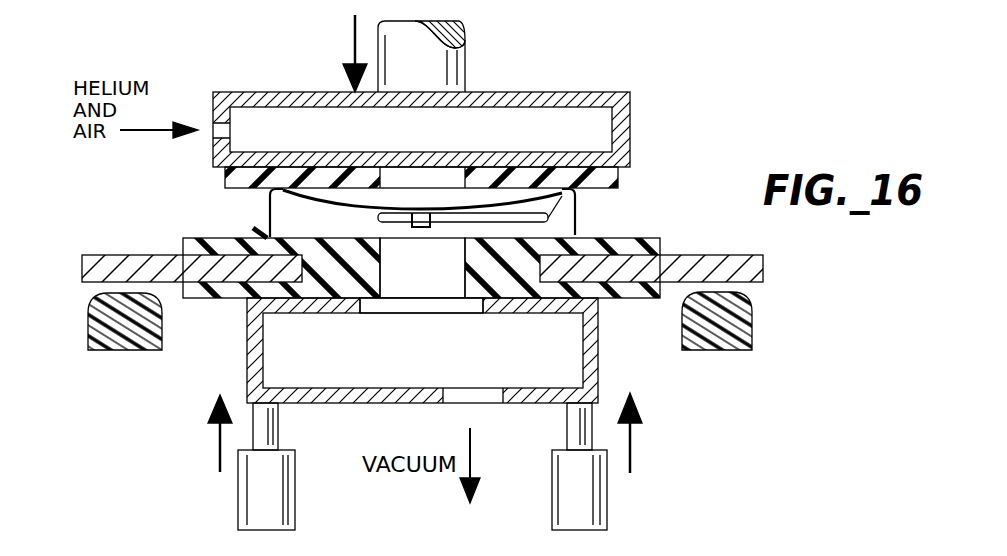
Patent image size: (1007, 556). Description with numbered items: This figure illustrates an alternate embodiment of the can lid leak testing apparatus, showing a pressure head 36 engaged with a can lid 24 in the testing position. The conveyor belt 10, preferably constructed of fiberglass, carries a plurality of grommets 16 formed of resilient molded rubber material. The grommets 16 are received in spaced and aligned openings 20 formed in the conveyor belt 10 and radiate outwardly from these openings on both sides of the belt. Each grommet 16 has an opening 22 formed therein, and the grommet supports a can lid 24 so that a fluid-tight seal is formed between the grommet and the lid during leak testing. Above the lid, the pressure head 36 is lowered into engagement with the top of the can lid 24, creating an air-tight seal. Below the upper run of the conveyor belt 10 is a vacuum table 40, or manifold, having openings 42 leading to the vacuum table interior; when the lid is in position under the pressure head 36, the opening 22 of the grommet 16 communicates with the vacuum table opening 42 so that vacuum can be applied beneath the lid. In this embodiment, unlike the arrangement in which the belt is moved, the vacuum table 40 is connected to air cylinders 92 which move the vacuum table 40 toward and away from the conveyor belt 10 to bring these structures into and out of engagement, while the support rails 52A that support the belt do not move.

The conveyor belt 10 is at (95, 257).
The grommets 16 is at (640, 246).
The openings 20 is at (313, 243).
The openings 22 is at (391, 262).
The can lids 24 is at (558, 222).
The pressure heads 36 is at (503, 94).
The vacuum table 40 is at (328, 402).
The openings 42 is at (466, 303).
The support rails 52A is at (163, 337).
The air cylinders 92 is at (272, 511).